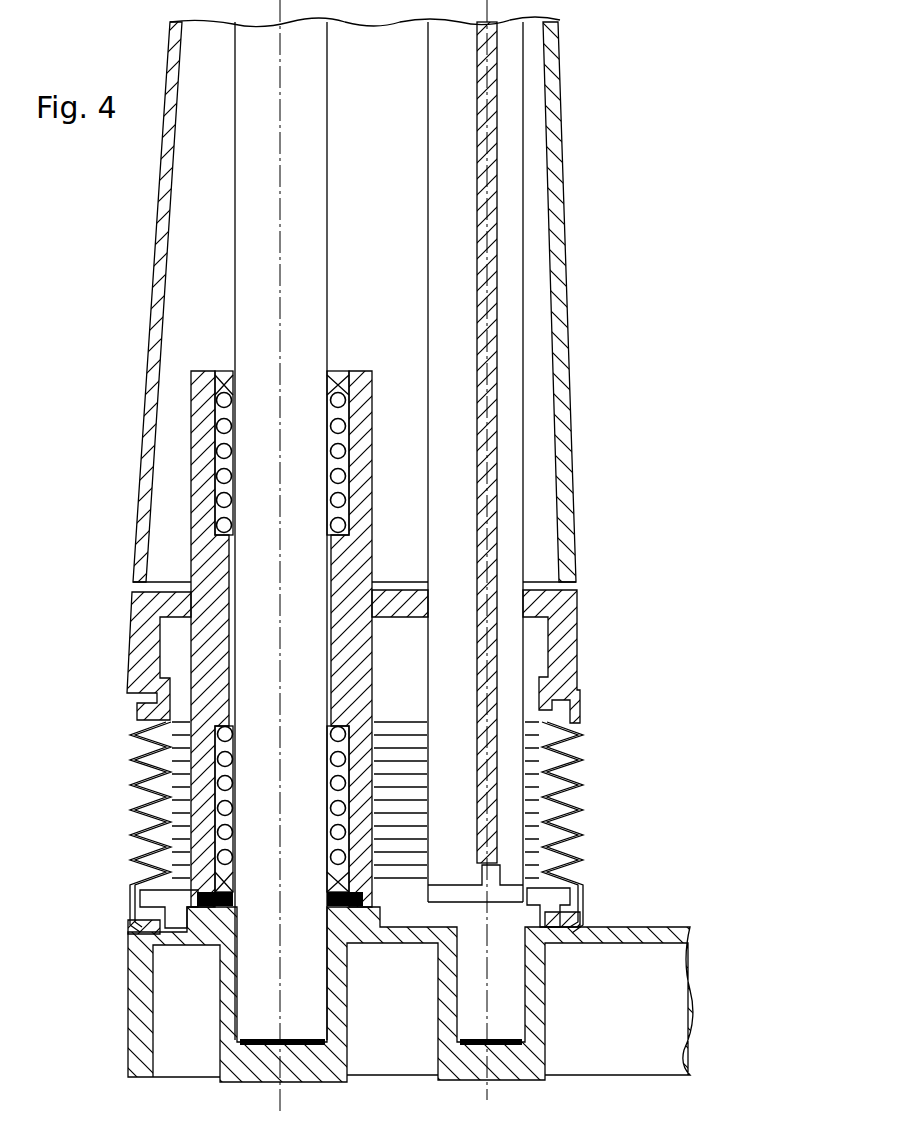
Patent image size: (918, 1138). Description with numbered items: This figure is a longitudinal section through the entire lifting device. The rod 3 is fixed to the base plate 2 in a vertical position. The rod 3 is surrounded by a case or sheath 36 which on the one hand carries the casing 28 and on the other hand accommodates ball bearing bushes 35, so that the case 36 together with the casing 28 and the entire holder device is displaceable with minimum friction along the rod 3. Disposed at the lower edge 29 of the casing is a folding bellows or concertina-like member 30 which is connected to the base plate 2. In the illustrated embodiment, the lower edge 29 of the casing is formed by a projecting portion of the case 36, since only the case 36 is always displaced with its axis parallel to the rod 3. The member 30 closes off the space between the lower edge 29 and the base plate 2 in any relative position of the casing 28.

The base plate 2 is at (650, 935).
The rod 3 is at (298, 157).
The casing 28 is at (160, 325).
The lower edge of the casing 29 is at (143, 633).
The folding bellows 30 is at (572, 808).
The ball bearing bushes 35 is at (339, 452).
The case 36 is at (358, 385).